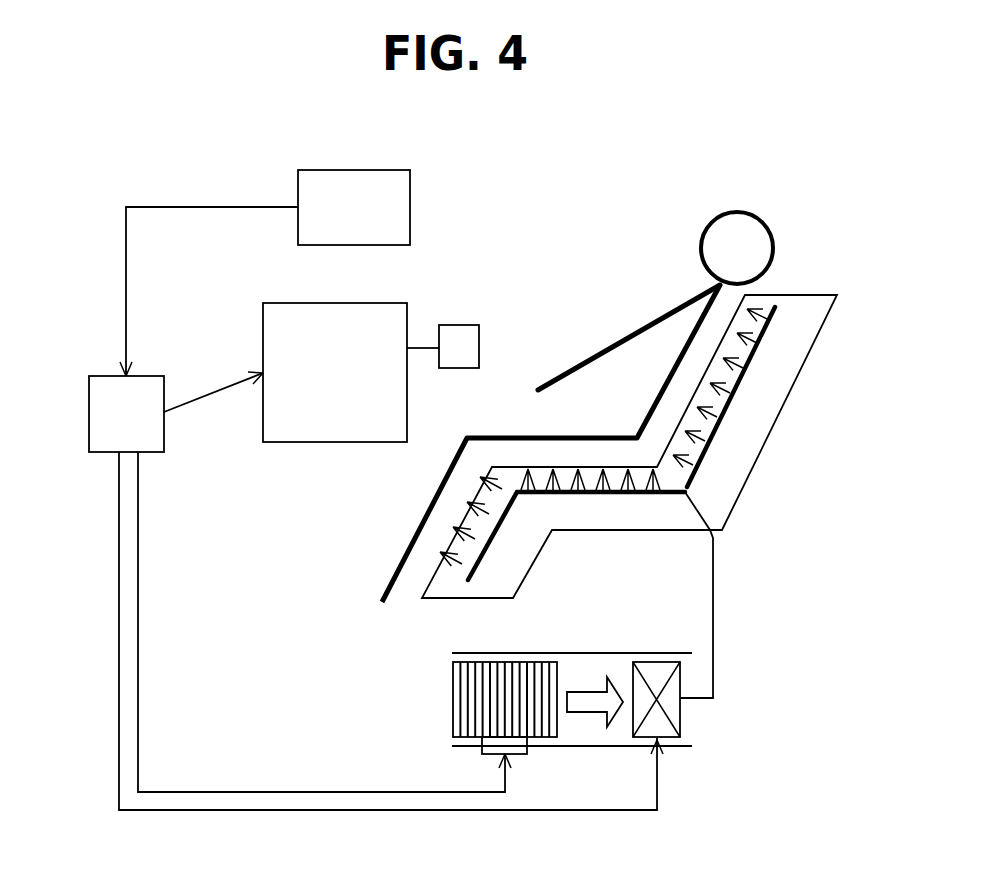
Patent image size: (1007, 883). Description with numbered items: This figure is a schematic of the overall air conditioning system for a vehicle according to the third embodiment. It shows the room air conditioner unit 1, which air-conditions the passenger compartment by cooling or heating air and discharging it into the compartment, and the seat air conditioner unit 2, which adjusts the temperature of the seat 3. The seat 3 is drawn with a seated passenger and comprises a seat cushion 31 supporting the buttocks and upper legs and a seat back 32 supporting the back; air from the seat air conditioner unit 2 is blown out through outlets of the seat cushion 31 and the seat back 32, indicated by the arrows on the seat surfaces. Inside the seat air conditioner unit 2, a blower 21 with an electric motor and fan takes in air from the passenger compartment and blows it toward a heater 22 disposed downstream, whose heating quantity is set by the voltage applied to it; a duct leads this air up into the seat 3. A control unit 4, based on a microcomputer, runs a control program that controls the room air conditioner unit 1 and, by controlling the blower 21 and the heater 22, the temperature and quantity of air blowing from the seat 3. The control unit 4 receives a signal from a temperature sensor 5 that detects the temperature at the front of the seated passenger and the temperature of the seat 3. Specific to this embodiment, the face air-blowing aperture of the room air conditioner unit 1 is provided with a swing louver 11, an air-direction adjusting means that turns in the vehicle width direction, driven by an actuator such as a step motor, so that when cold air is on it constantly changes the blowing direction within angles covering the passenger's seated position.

The room air conditioner unit 1 is at (263, 311).
The seat air conditioner unit 2 is at (440, 716).
The blower 21 is at (465, 680).
The heater 22 is at (680, 717).
The seat 3 is at (764, 459).
The seat cushion 31 is at (590, 469).
The seat back 32 is at (740, 381).
The control unit 4 is at (89, 416).
The temperature sensor 5 is at (350, 170).
The swing louver 11 is at (455, 325).